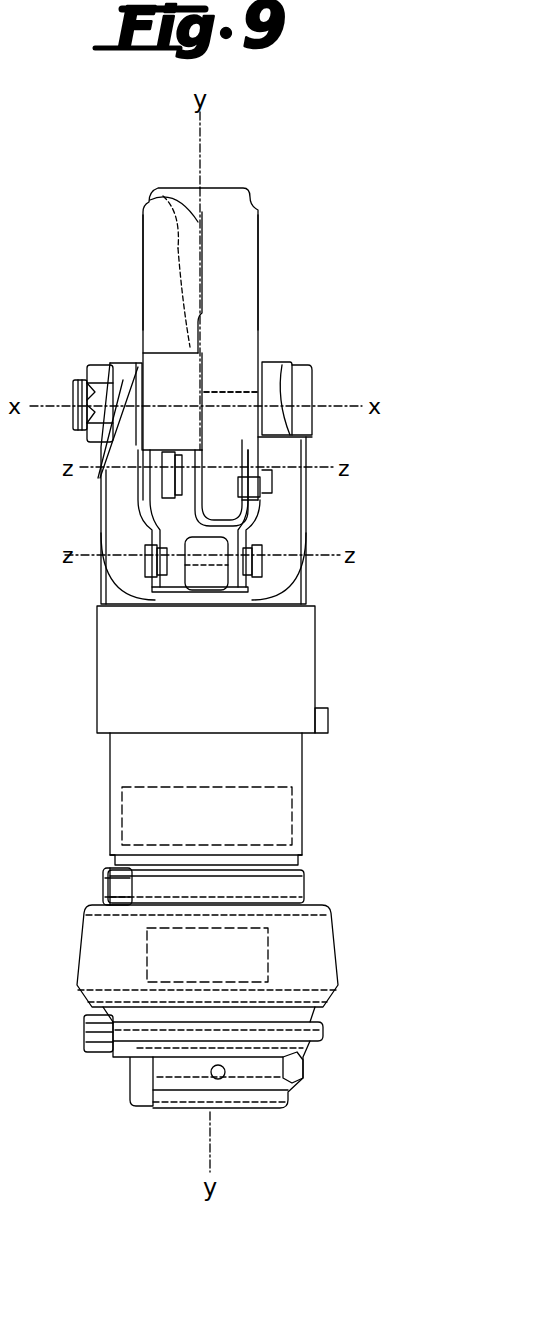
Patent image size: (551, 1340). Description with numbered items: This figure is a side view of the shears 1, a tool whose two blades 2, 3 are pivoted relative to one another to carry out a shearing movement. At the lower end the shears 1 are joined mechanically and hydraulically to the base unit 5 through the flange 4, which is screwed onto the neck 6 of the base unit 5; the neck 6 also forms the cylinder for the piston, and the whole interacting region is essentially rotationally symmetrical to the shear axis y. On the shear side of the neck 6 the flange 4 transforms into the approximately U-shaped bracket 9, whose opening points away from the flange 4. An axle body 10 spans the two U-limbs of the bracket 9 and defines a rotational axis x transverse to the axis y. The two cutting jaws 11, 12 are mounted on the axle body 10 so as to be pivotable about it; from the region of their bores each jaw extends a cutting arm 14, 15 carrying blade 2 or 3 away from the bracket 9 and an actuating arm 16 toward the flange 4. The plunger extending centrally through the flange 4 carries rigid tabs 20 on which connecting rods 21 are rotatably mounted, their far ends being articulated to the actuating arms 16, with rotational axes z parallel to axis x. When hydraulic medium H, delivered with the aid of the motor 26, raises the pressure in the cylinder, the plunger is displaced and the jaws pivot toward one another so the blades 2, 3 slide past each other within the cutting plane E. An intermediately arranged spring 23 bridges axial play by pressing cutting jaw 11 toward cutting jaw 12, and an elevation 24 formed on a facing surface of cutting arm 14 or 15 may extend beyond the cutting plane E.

The shears 1 is at (266, 159).
The blade 2 is at (203, 267).
The blade 3 is at (197, 221).
The flange 4 is at (300, 668).
The base unit 5 is at (328, 1074).
The neck 6 is at (275, 758).
The bracket 9 is at (303, 520).
The axle body 10 is at (302, 388).
The cutting jaw 11 is at (244, 272).
The cutting jaw 12 is at (164, 260).
The cutting arm 14 is at (245, 312).
The cutting arm 15 is at (160, 305).
The actuating arm 16 is at (243, 445).
The tab 20 is at (192, 570).
The connecting rod 21 is at (243, 570).
The spring 23 is at (138, 395).
The elevation 24 is at (200, 345).
The motor 26 is at (270, 952).
The cutting plane E is at (198, 148).
The hydraulic medium H is at (293, 797).